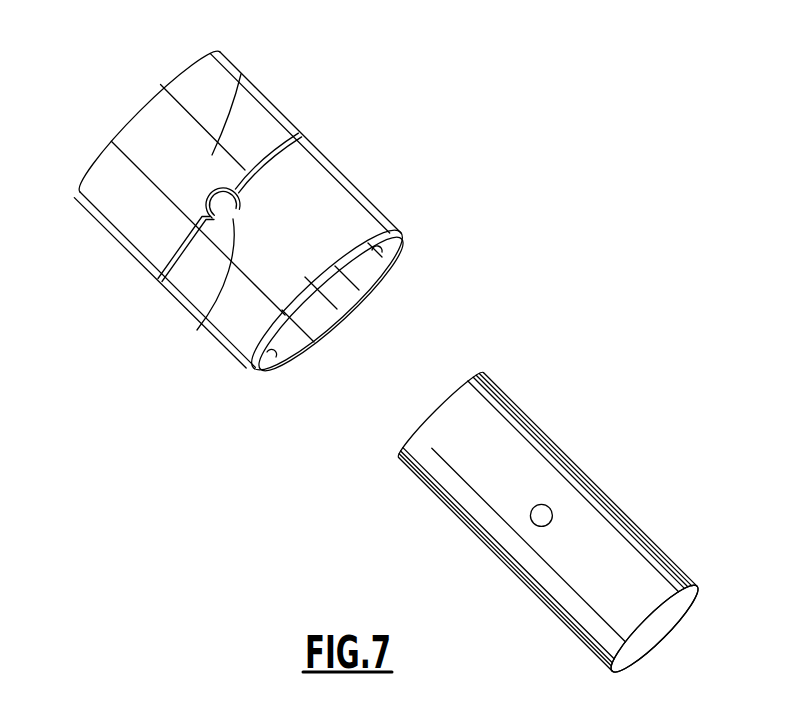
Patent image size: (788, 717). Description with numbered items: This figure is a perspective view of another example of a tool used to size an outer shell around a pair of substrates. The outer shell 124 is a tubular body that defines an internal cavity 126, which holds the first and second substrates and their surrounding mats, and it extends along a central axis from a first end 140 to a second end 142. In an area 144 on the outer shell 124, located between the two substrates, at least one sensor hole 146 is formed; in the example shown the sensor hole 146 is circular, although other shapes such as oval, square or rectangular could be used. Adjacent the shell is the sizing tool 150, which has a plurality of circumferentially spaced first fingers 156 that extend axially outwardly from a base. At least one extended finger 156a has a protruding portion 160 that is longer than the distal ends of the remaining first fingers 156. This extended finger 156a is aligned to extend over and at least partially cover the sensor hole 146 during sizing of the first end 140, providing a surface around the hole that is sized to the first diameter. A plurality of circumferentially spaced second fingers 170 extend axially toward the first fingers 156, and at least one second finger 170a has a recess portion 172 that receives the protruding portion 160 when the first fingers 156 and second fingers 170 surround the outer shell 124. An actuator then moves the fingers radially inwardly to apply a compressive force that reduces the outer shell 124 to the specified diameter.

The sizing tool 150 is at (412, 90).
The first fingers 156 is at (190, 82).
The extended finger 156a is at (241, 74).
The protruding portion 160 is at (141, 255).
The second fingers 170 is at (397, 227).
The second finger with recess 170a is at (293, 278).
The recess portion 172 is at (208, 320).
The first end 140 is at (482, 372).
The outer shell 124 is at (560, 446).
The internal cavity 126 is at (656, 638).
The second end 142 is at (698, 591).
The area 144 is at (516, 540).
The sensor hole 146 is at (553, 515).